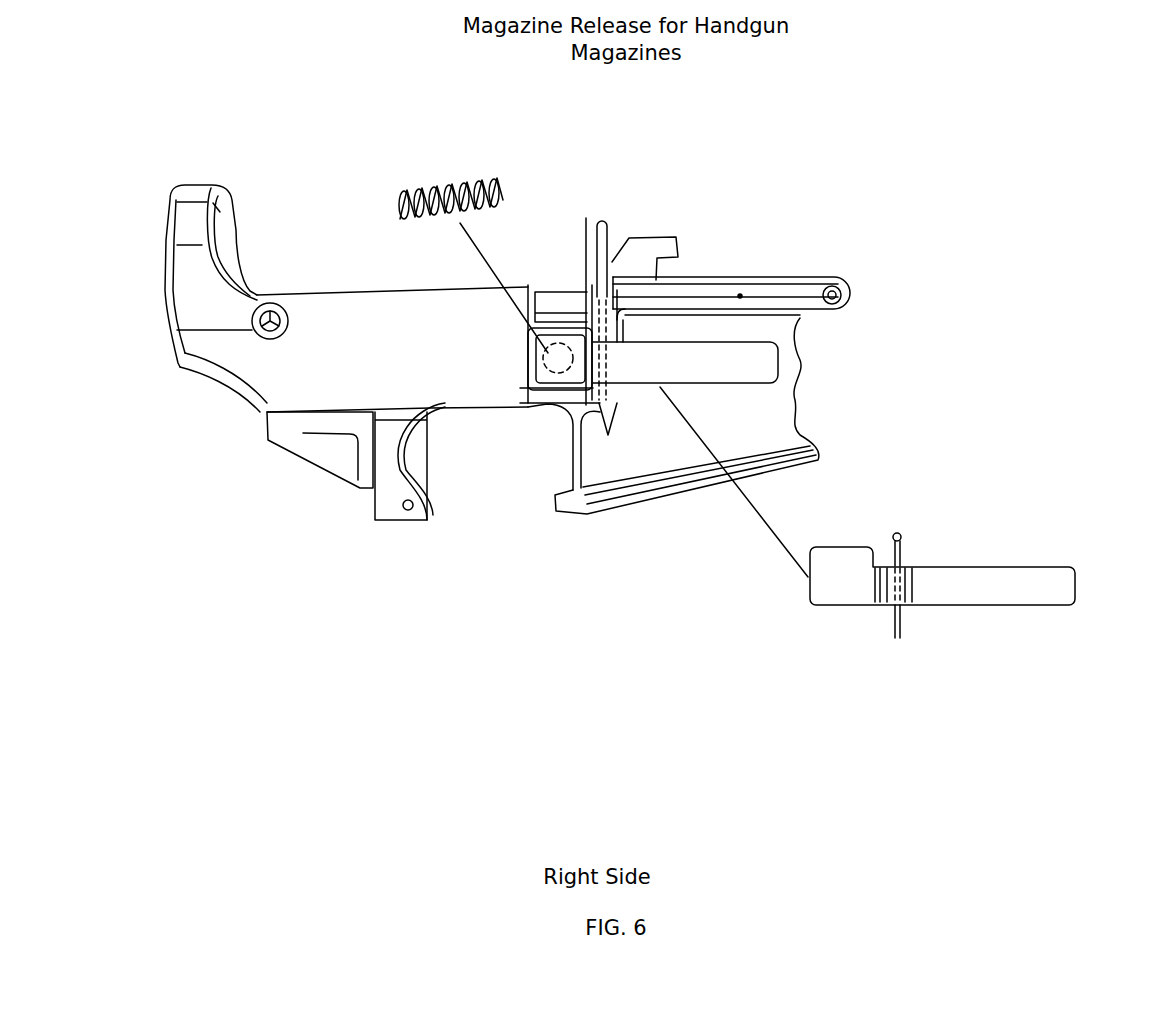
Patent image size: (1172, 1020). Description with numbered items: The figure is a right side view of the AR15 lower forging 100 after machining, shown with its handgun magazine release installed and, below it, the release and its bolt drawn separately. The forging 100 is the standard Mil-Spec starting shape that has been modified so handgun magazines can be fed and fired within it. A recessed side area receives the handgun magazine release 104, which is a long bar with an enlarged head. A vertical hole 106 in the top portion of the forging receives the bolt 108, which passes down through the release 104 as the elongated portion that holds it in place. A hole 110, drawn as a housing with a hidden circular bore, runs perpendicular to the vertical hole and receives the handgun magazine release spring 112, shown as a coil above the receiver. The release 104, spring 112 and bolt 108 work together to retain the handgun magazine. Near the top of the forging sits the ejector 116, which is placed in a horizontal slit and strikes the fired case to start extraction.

The AR15 lower forging 100 is at (797, 363).
The handgun magazine release 104 is at (760, 360).
The vertical hole 106 is at (612, 300).
The bolt 108 is at (608, 240).
The hole 110 is at (527, 353).
The handgun magazine release spring 112 is at (503, 200).
The ejector 116 is at (682, 247).